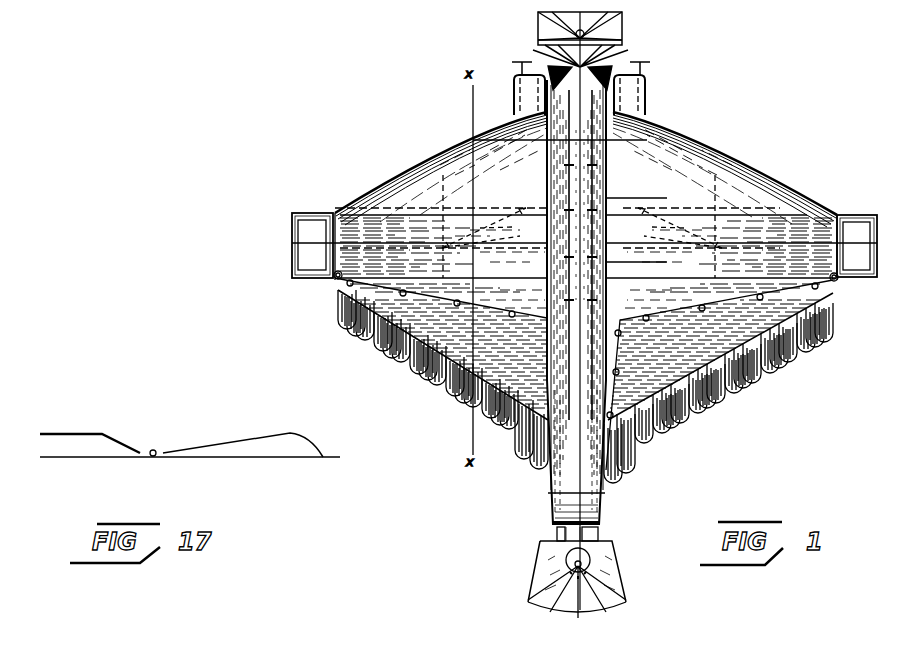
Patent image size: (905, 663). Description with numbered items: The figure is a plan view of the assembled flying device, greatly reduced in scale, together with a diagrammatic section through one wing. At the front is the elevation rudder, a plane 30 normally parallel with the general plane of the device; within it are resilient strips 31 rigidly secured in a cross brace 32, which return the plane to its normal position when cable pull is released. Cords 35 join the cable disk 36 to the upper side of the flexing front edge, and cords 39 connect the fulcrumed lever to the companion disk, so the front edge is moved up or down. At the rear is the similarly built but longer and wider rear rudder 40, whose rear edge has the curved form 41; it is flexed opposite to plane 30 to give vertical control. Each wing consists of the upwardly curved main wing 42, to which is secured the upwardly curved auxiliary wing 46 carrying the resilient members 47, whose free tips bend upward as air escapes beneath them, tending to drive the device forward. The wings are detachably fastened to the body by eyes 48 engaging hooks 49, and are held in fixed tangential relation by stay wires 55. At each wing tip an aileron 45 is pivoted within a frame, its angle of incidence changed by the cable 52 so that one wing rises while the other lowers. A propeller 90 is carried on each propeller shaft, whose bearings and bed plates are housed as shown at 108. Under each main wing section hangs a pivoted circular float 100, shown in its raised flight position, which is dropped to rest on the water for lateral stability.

In FIG. 1, the plane 30 is at (580, 28).
In FIG. 1, the resilient strips 31 is at (533, 50).
In FIG. 1, the cross brace 32 is at (600, 60).
In FIG. 1, the propeller 90 is at (512, 62).
In FIG. 1, the housing 108 is at (528, 96).
In FIG. 1, the eyes 48 is at (552, 170).
In FIG. 1, the hooks 49 is at (568, 176).
In FIG. 1, the main wing 42 is at (584, 210).
In FIG. 17, the main wing 42 is at (252, 443).
In FIG. 1, the float 100 is at (582, 228).
In FIG. 1, the stay wires 55 is at (636, 200).
In FIG. 1, the aileron 45 is at (313, 213).
In FIG. 1, the cable 52 is at (453, 282).
In FIG. 1, the auxiliary wing 46 is at (520, 337).
In FIG. 17, the auxiliary wing 46 is at (125, 450).
In FIG. 1, the resilient members 47 is at (470, 396).
In FIG. 17, the resilient members 47 is at (76, 433).
In FIG. 1, the cords 39 is at (600, 532).
In FIG. 1, the cable disk 36 is at (598, 568).
In FIG. 1, the rear rudder 40 is at (565, 563).
In FIG. 1, the curved rear edge 41 is at (575, 612).
In FIG. 1, the cords 35 is at (598, 604).